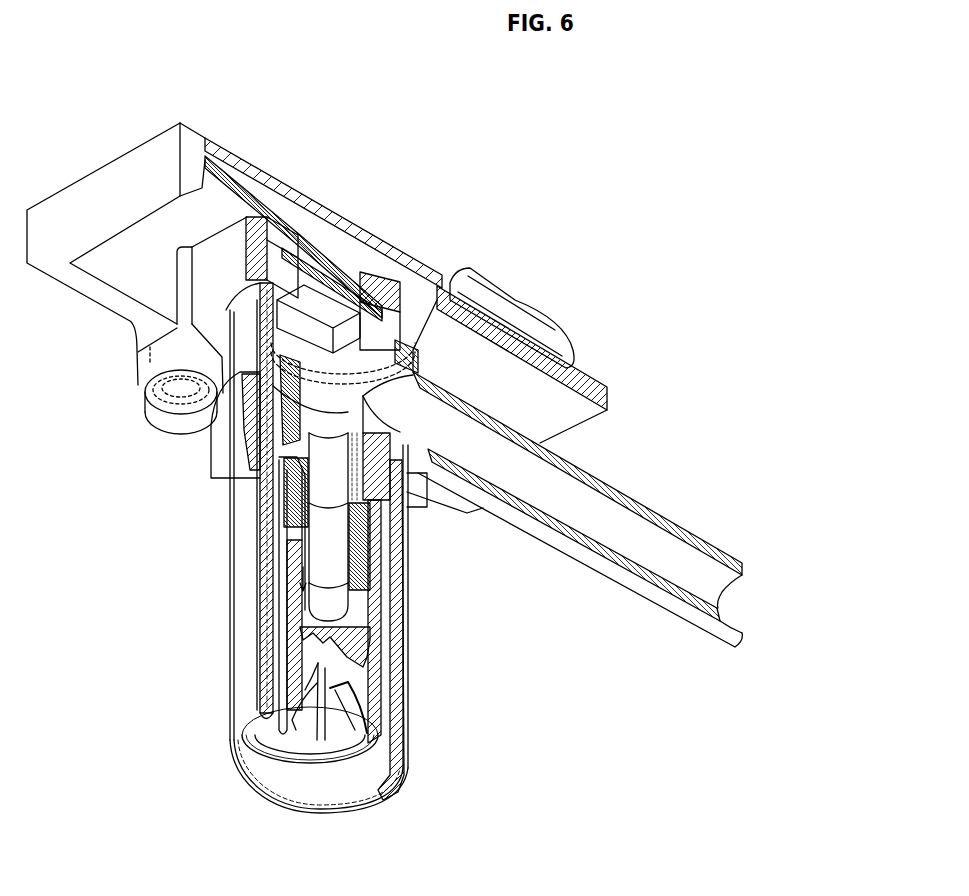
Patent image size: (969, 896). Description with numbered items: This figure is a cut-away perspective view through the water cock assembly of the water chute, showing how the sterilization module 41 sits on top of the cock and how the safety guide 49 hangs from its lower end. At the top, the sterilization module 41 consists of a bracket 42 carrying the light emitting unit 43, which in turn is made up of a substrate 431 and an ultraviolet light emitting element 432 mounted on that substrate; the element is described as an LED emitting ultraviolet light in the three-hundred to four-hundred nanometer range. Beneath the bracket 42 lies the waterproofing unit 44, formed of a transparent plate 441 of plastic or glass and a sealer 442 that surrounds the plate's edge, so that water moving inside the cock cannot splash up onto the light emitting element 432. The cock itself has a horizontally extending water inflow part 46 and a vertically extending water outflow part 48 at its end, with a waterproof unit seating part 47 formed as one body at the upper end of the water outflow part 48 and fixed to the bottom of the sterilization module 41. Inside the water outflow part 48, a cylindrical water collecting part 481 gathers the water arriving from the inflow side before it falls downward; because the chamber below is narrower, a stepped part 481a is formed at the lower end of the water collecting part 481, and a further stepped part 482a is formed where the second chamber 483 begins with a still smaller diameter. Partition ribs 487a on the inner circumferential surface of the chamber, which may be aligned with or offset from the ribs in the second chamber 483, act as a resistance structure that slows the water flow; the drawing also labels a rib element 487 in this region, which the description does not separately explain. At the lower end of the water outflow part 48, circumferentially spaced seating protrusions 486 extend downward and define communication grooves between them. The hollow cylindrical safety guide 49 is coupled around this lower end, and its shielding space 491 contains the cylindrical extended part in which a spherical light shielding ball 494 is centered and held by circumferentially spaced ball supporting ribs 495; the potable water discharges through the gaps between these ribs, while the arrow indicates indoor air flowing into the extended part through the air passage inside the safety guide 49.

The sterilization module 41 is at (448, 163).
The bracket 42 is at (253, 170).
The light emitting unit 43 is at (380, 163).
The substrate 431 is at (350, 237).
The light emitting element 432 is at (320, 237).
The waterproofing unit 44 is at (412, 178).
The transparent plate 441 is at (342, 288).
The sealer 442 is at (428, 285).
The water inflow part 46 is at (645, 513).
The waterproof unit seating part 47 is at (200, 273).
The water outflow part 48 is at (105, 452).
The water collecting part 481 is at (245, 360).
The stepped part 481a is at (260, 438).
The plunger 487 is at (283, 470).
The partition ribs 487a is at (390, 496).
The stepped part 482a is at (280, 462).
The second chamber 483 is at (286, 538).
The seating protrusions 486 is at (408, 568).
The safety guide 49 is at (240, 682).
The shielding space 491 is at (283, 780).
The light shielding ball 494 is at (368, 742).
The ball supporting ribs 495 is at (340, 745).